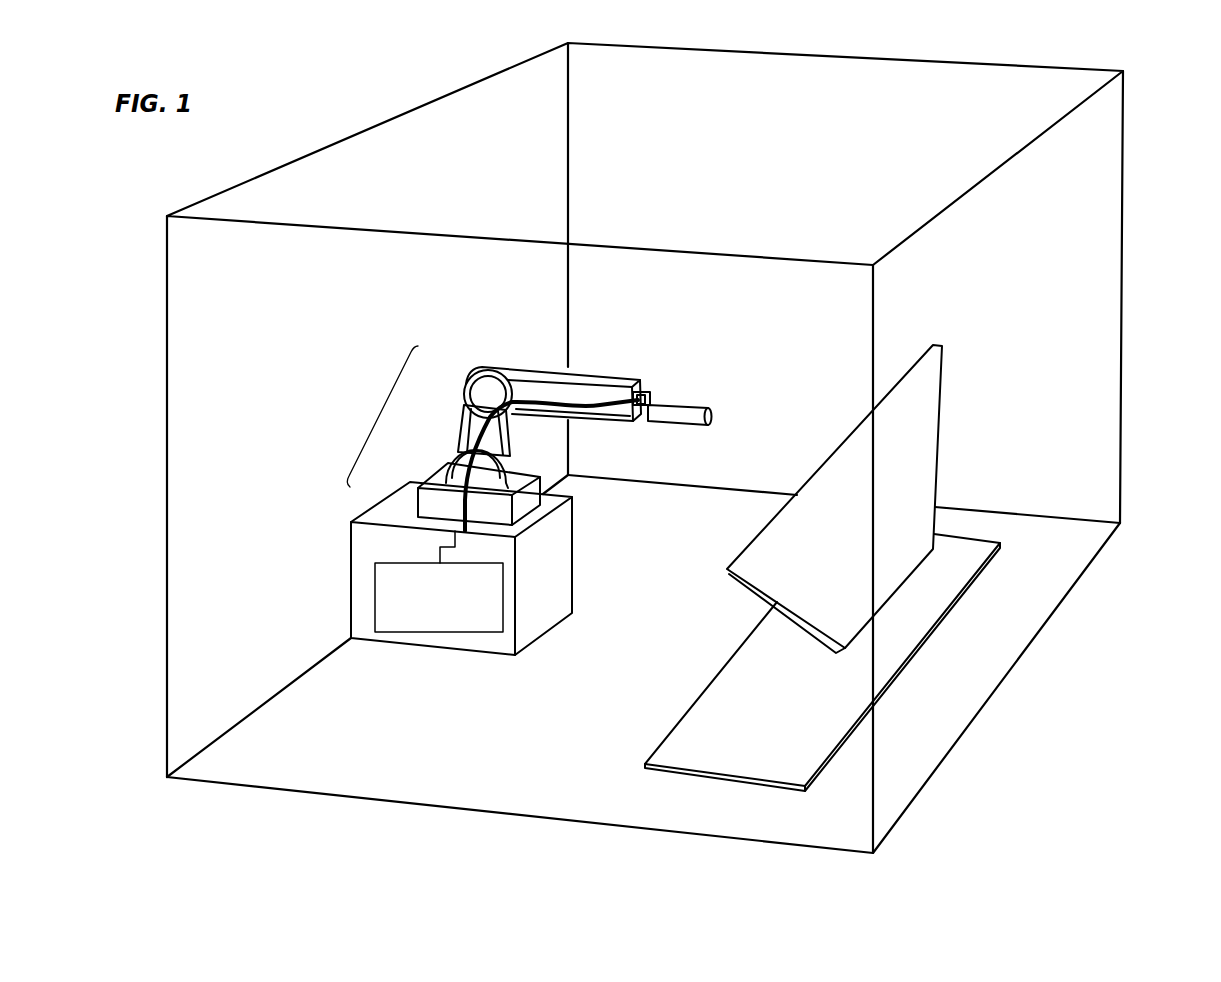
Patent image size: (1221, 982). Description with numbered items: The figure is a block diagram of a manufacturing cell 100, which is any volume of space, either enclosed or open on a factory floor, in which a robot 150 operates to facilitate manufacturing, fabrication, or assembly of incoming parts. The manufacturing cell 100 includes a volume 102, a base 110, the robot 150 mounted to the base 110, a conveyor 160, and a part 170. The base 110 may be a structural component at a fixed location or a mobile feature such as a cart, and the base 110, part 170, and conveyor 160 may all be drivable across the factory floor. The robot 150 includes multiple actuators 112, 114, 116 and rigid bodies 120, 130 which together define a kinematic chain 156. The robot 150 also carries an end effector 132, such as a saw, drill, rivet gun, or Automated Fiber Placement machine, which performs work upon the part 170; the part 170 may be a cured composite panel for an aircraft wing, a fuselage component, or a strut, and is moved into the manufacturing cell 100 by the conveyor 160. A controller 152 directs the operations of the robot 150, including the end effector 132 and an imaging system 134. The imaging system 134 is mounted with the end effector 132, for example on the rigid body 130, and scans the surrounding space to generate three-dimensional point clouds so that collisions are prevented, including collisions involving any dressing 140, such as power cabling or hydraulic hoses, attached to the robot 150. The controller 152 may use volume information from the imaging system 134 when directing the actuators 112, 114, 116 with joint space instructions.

The manufacturing cell 100 is at (1123, 163).
The volume 102 is at (1134, 347).
The base 110 is at (492, 568).
The actuator 112 is at (540, 484).
The actuator 114 is at (454, 459).
The actuator 116 is at (502, 366).
The rigid body 120 is at (474, 430).
The rigid body 130 is at (620, 378).
The end effector 132 is at (692, 427).
The imaging system 134 is at (656, 392).
The dressing 140 is at (593, 420).
The robot 150 is at (657, 343).
The controller 152 is at (457, 617).
The kinematic chain 156 is at (387, 401).
The conveyor 160 is at (898, 640).
The part 170 is at (918, 449).